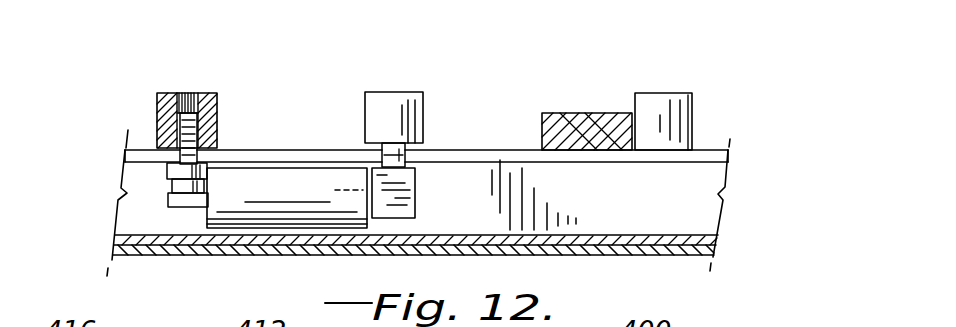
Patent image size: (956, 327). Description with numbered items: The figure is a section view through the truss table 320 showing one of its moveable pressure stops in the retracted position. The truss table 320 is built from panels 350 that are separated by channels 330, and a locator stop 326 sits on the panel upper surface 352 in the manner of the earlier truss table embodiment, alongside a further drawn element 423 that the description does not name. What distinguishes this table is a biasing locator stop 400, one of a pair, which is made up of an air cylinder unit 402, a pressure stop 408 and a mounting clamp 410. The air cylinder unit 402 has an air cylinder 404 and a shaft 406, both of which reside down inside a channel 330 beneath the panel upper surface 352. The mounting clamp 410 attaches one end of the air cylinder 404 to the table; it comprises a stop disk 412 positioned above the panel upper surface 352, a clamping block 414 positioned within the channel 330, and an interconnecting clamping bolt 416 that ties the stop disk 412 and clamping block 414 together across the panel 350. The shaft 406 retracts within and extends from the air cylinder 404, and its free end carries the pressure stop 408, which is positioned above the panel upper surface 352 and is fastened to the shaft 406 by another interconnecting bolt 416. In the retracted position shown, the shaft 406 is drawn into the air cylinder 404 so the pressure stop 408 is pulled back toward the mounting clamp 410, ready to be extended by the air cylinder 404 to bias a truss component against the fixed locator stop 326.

The truss table 320 is at (718, 144).
The locator stop 326 is at (673, 103).
The channel 330 is at (138, 217).
The panel 350 is at (502, 155).
The panel upper surface 352 is at (325, 148).
The biasing locator stop 400 is at (447, 84).
The air cylinder unit 402 is at (275, 233).
The air cylinder 404 is at (288, 175).
The shaft 406 is at (365, 197).
The pressure stop 408 is at (388, 102).
The mounting clamp 410 is at (147, 111).
The stop disk 412 is at (218, 110).
The clamping block 414 is at (167, 173).
The clamping bolt 416 is at (186, 92).
The cross-hatched component 423 is at (583, 113).